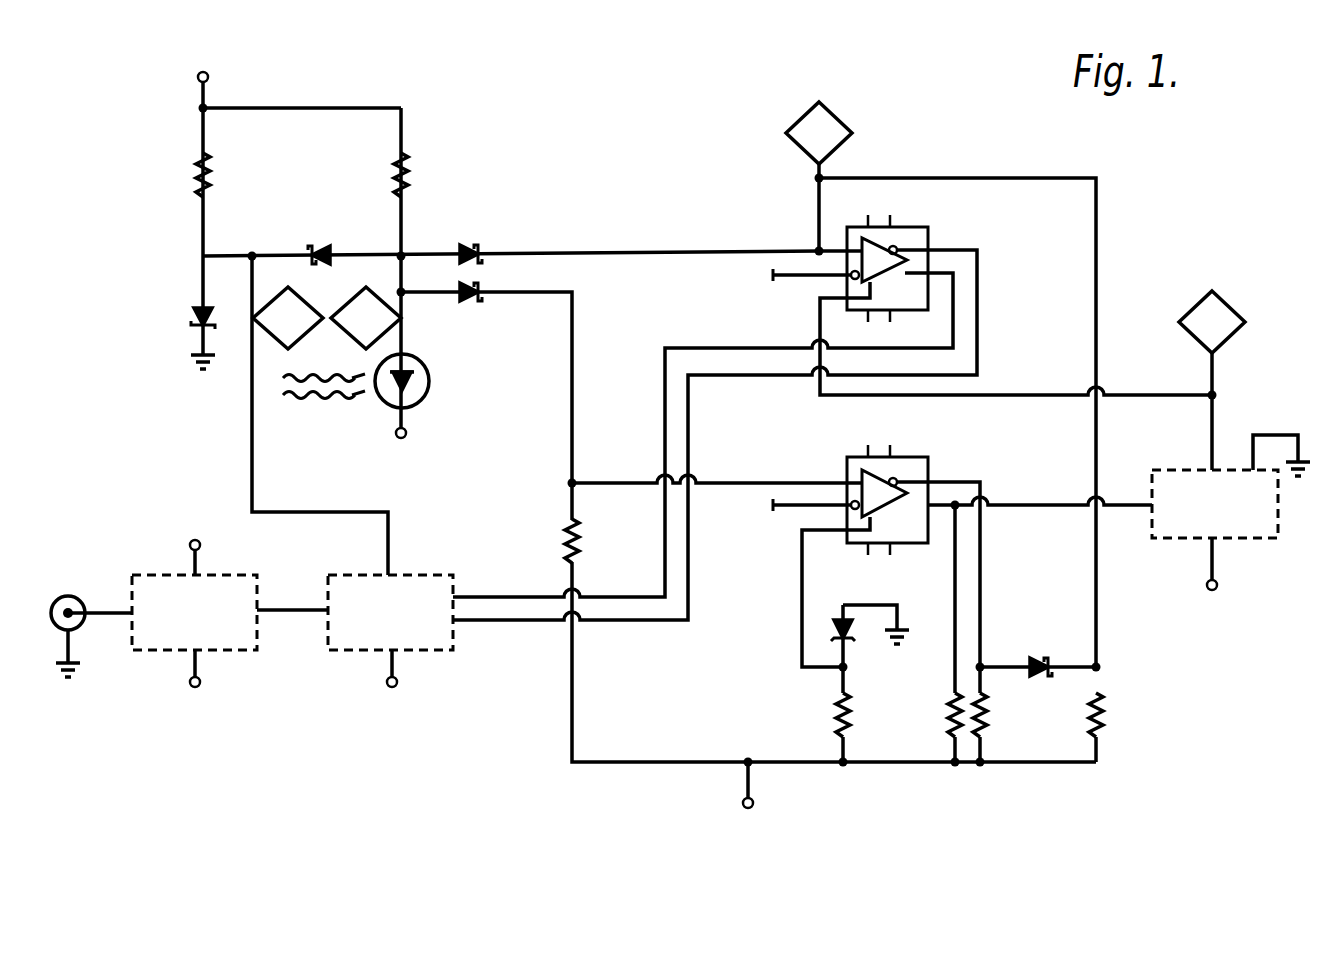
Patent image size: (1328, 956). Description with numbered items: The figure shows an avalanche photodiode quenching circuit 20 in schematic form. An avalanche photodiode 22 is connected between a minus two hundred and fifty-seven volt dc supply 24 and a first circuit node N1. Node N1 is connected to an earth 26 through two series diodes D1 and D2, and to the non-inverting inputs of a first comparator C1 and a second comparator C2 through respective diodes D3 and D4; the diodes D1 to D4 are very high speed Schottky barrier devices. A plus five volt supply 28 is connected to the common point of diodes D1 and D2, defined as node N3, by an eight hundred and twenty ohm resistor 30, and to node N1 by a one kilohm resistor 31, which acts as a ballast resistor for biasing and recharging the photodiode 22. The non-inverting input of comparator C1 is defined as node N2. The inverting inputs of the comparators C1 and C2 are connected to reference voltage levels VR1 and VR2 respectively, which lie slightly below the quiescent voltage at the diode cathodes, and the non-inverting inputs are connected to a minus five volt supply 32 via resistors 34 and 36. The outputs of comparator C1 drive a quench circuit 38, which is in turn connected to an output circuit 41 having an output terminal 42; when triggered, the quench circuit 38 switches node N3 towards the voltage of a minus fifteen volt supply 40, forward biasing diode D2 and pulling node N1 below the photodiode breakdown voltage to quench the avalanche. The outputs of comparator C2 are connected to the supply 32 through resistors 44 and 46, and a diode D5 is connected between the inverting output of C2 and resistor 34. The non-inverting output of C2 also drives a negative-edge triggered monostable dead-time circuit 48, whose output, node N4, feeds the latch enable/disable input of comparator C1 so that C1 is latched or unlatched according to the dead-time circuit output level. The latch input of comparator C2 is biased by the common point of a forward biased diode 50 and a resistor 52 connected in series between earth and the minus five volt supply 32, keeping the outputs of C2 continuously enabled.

The avalanche photodiode quenching circuit 20 is at (643, 118).
The avalanche photodiode 22 is at (427, 358).
The -257 V dc supply 24 is at (407, 439).
The earth 26 is at (192, 366).
The +5 V supply 28 is at (208, 72).
The 820 ohm resistor 30 is at (196, 176).
The 1 Kohm resistor 31 is at (394, 176).
The -5 V supply 32 is at (755, 803).
The 1.2 Kohm resistor 34 is at (1106, 722).
The 1.2 Kohm resistor 36 is at (566, 541).
The quench circuit 38 is at (427, 574).
The -15 V supply 40 is at (396, 685).
The output circuit 41 is at (230, 651).
The output terminal 42 is at (68, 609).
The 330 ohm resistor 44 is at (950, 728).
The 390 ohm resistor 46 is at (990, 727).
The dead-time circuit 48 is at (1168, 468).
The forward biased diode 50 is at (840, 630).
The 1.2 Kohm resistor 52 is at (838, 728).
The diode D1 is at (196, 318).
The diode D2 is at (324, 248).
The diode D3 is at (466, 248).
The diode D4 is at (464, 288).
The diode D5 is at (1040, 656).
The first comparator C1 is at (928, 226).
The second comparator C2 is at (928, 455).
The reference voltage level VR1 is at (785, 280).
The reference voltage level VR2 is at (785, 510).
The first circuit node N1 is at (366, 318).
The circuit node N2 is at (819, 133).
The circuit node N3 is at (288, 318).
The circuit node N4 is at (1212, 322).